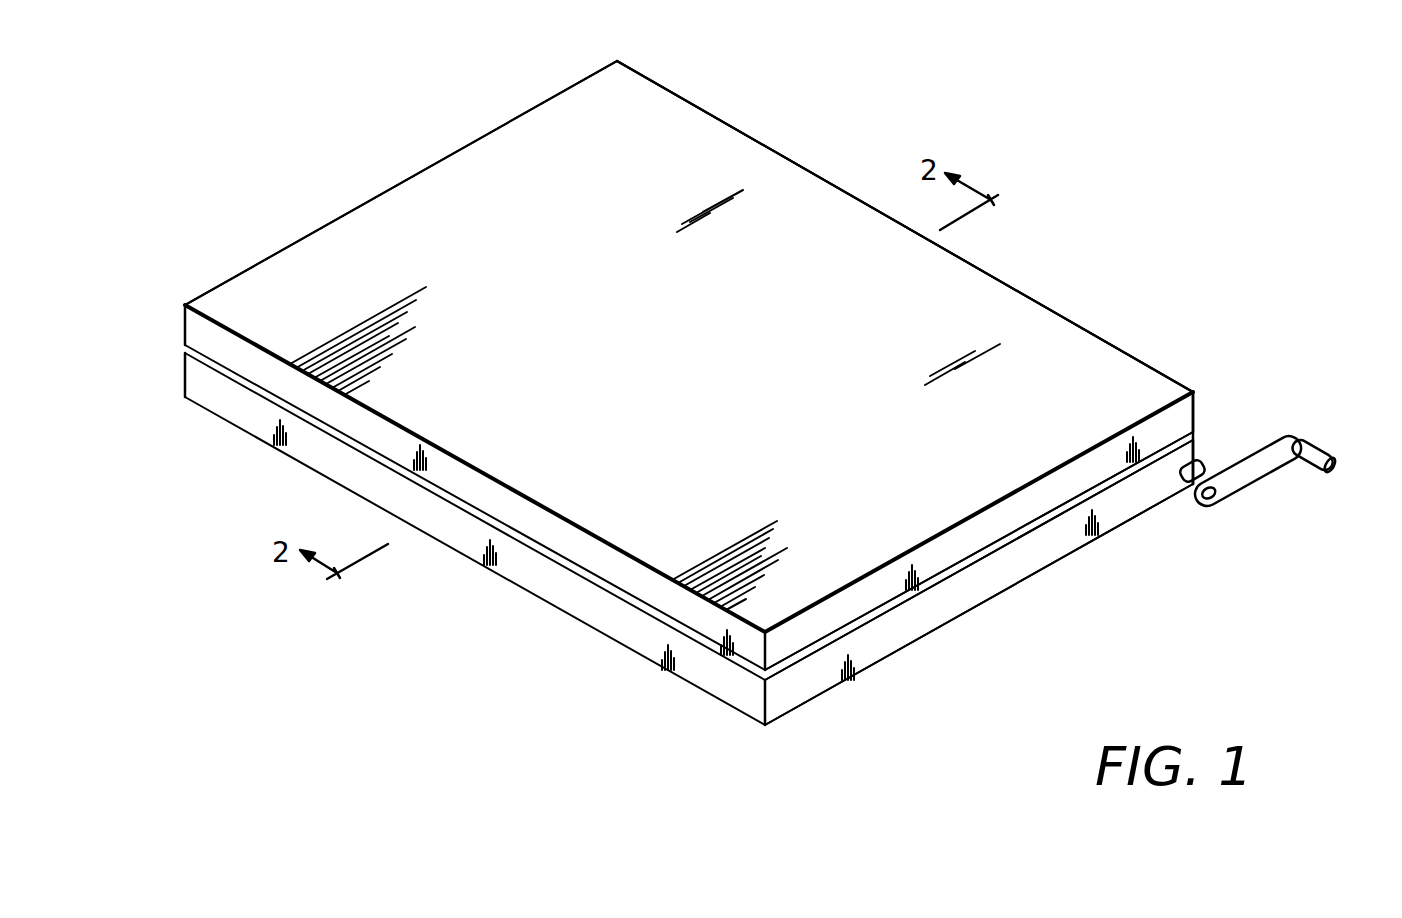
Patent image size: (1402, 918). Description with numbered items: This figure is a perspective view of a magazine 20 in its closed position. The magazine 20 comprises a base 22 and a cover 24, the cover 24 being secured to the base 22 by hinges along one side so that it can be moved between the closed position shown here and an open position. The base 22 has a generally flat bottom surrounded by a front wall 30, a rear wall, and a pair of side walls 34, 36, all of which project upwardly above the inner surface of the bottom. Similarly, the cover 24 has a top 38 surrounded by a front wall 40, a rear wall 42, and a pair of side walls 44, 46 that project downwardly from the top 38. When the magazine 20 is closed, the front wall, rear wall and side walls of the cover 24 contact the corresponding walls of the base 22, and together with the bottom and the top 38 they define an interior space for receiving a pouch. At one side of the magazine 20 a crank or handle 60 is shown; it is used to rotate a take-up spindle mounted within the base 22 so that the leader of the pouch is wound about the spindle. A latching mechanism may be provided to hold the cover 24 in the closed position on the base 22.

The magazine 20 is at (1106, 280).
The base 22 is at (930, 638).
The cover 24 is at (1200, 414).
The front wall 30 is at (258, 424).
The side wall 34 is at (1026, 574).
The side wall 36 is at (182, 378).
The top 38 is at (656, 316).
The front wall 40 is at (384, 437).
The rear wall 42 is at (712, 115).
The side wall 44 is at (955, 545).
The side wall 46 is at (182, 318).
The crank or handle 60 is at (1305, 434).